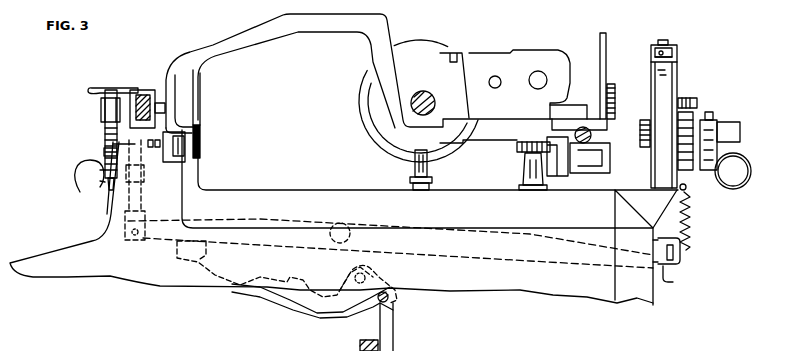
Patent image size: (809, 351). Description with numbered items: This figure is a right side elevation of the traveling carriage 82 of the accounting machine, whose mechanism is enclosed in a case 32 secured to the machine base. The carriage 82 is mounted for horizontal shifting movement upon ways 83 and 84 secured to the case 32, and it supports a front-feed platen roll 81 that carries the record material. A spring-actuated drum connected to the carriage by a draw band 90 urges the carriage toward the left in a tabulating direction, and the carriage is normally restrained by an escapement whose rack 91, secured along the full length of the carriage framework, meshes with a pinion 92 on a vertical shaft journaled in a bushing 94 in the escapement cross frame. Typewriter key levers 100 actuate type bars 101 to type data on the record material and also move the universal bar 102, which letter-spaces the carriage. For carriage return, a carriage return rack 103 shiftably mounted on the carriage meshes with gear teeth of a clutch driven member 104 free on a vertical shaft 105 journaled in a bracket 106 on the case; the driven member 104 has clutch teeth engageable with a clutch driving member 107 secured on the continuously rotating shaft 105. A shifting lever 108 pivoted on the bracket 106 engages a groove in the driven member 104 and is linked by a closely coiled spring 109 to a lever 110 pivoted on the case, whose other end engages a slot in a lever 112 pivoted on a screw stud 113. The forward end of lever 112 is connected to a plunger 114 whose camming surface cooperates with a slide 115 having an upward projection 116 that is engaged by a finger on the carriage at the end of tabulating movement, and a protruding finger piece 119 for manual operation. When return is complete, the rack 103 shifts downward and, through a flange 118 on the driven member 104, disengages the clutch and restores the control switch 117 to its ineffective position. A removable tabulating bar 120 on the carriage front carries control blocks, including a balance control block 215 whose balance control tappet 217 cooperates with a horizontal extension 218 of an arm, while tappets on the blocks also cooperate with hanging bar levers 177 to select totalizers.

The case 32 is at (75, 245).
The platen roll 81 is at (428, 50).
The traveling carriage 82 is at (228, 55).
The way 83 is at (184, 163).
The way 84 is at (591, 134).
The draw band 90 is at (410, 180).
The rack 91 is at (516, 142).
The pinion 92 is at (524, 156).
The bushing 94 is at (520, 180).
The levers 100 is at (393, 313).
The type bars 101 is at (252, 293).
The universal bar 102 is at (370, 340).
The carriage return rack 103 is at (622, 115).
The clutch driven member 104 is at (650, 133).
The vertical shaft 105 is at (665, 40).
The bracket 106 is at (677, 66).
The clutch driving member 107 is at (694, 98).
The shifting lever 108 is at (692, 188).
The closely coiled spring 109 is at (694, 210).
The lever 110 is at (676, 255).
The lever 112 is at (680, 279).
The screw stud 113 is at (350, 235).
The plunger 114 is at (140, 215).
The slide 115 is at (142, 187).
The upward projection 116 is at (106, 137).
The control switch 117 is at (736, 160).
The flange 118 is at (647, 157).
The finger piece 119 is at (80, 189).
The tabulating bar 120 is at (141, 97).
The hanging bar levers 177 is at (152, 148).
The balance control block 215 is at (147, 92).
The balance control tappet 217 is at (105, 129).
The horizontal extension 218 is at (104, 153).